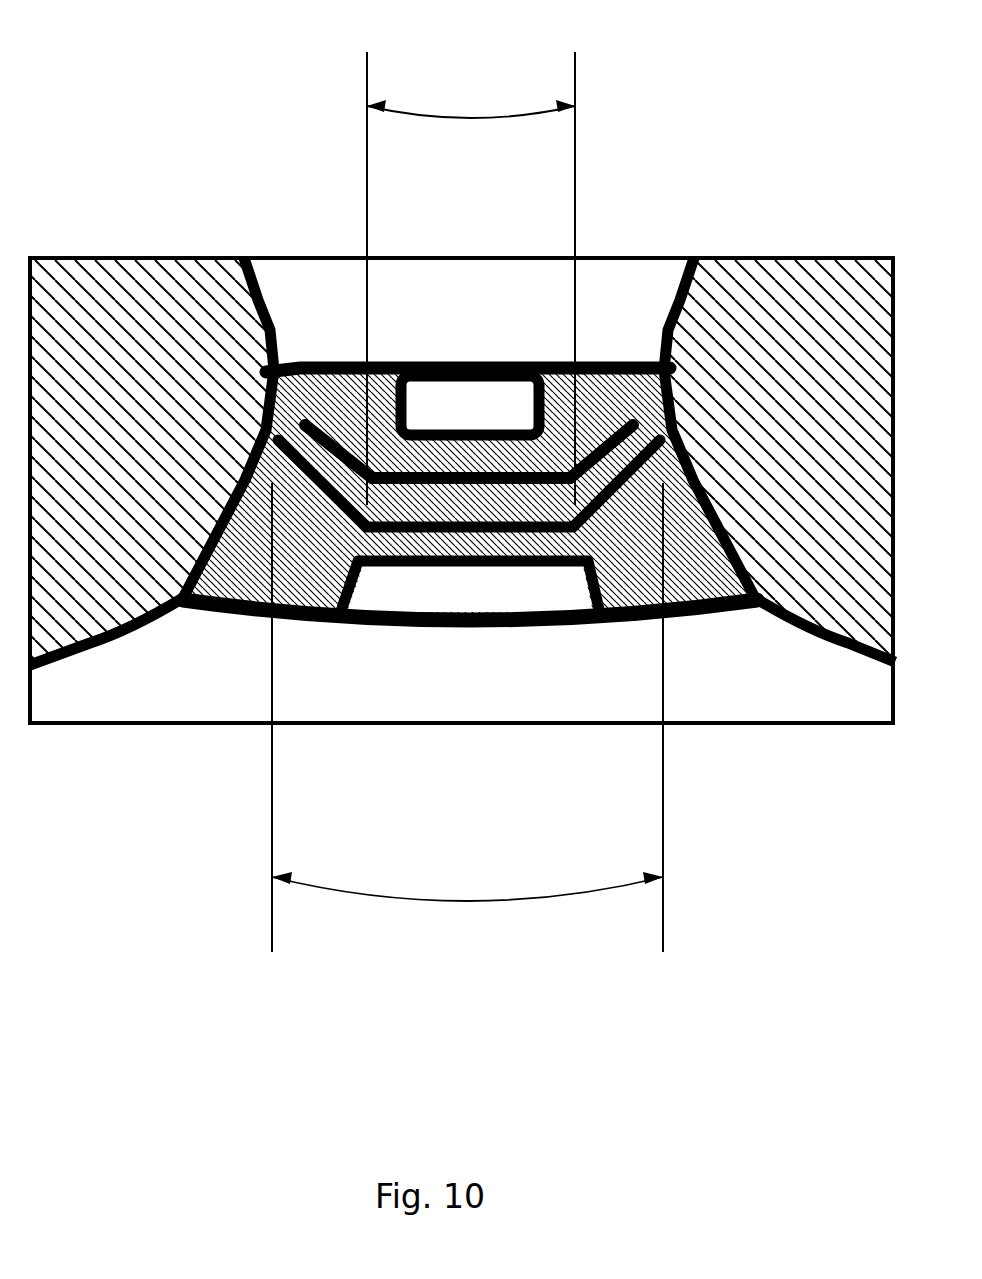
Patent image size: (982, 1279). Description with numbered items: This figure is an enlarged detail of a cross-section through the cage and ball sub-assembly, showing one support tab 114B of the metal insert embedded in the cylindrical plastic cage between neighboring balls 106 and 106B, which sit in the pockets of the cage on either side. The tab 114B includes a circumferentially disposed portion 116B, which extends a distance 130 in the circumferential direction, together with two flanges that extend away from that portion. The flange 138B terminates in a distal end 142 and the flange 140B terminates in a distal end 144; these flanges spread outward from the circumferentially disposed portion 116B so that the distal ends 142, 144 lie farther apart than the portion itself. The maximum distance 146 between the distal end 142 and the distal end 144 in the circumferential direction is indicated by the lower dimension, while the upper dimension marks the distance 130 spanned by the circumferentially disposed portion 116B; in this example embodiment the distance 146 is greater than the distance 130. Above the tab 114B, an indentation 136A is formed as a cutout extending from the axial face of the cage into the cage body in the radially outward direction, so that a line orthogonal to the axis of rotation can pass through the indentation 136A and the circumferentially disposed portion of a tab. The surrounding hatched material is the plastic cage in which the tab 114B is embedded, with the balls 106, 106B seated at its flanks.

The balls 106 is at (100, 318).
The second housing body 106B is at (823, 318).
The support tab 114B is at (469, 499).
The circumferentially disposed portion 116B is at (443, 505).
The distance 130 is at (468, 118).
The indentation 136A is at (423, 402).
The flange 138B is at (613, 457).
The flange 140B is at (313, 460).
The distal end 142 is at (643, 440).
The distal end 144 is at (287, 437).
The distance 146 is at (473, 903).